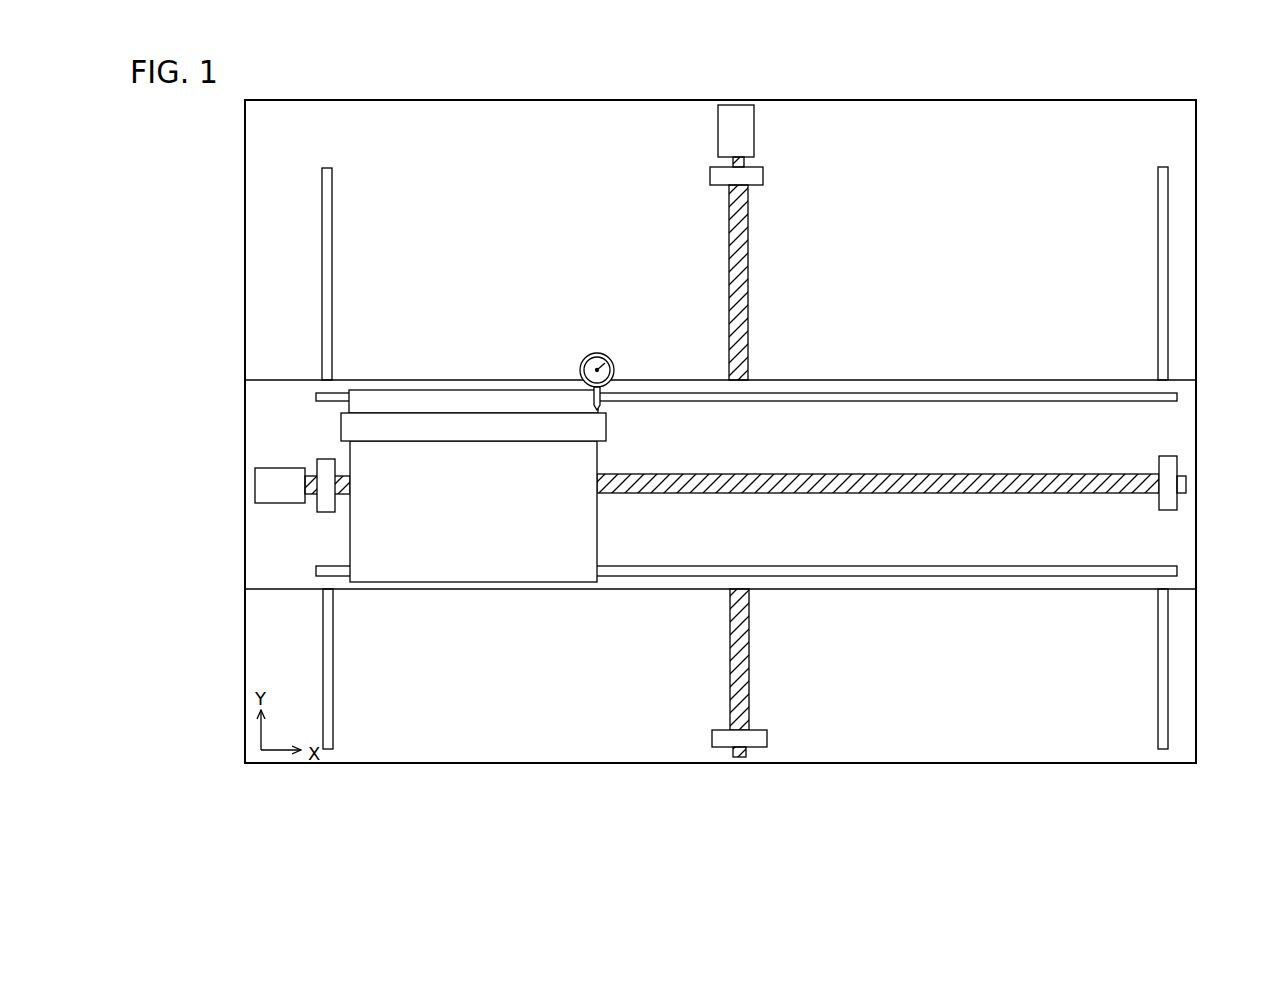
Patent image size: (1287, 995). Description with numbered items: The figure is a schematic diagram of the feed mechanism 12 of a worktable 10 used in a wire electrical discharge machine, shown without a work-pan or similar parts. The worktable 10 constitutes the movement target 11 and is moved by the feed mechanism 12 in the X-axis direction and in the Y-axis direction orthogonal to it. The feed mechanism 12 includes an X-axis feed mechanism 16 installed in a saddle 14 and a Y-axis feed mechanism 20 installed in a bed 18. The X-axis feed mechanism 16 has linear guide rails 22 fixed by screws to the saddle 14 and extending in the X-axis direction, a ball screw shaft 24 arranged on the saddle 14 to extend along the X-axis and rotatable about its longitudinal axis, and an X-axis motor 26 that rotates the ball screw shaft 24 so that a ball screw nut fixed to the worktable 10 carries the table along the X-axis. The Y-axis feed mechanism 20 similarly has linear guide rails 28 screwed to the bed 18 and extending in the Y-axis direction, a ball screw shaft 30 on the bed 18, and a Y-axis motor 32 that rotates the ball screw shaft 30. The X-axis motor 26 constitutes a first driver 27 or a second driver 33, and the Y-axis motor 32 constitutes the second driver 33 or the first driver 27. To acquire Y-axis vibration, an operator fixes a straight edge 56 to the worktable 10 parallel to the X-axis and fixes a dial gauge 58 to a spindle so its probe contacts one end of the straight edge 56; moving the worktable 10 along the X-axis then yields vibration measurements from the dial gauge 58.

The worktable 10 is at (473, 539).
The movement target 11 is at (464, 557).
The feed mechanism 12 is at (1204, 120).
The saddle 14 is at (1183, 433).
The X-axis feed mechanism 16 is at (312, 523).
The bed 18 is at (1183, 291).
The Y-axis feed mechanism 20 is at (749, 431).
The linear guide rails 22 is at (815, 397).
The ball screw shaft 24 is at (968, 485).
The X-axis motor 26 is at (251, 485).
The first driver 27 is at (272, 485).
The linear guide rails 28 is at (327, 229).
The ball screw shaft 30 is at (740, 273).
The Y-axis motor 32 is at (691, 145).
The second driver 33 is at (728, 136).
The straight edge 56 is at (492, 432).
The dial gauge 58 is at (605, 353).